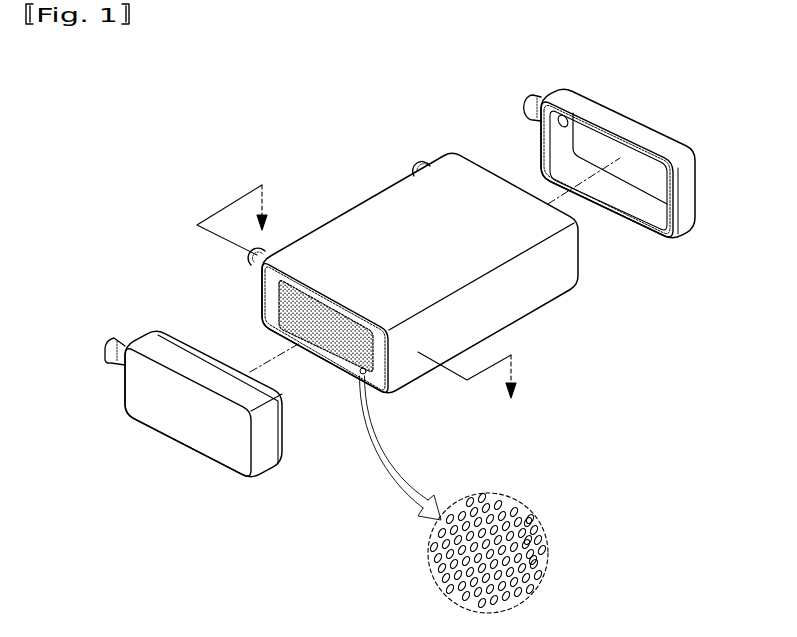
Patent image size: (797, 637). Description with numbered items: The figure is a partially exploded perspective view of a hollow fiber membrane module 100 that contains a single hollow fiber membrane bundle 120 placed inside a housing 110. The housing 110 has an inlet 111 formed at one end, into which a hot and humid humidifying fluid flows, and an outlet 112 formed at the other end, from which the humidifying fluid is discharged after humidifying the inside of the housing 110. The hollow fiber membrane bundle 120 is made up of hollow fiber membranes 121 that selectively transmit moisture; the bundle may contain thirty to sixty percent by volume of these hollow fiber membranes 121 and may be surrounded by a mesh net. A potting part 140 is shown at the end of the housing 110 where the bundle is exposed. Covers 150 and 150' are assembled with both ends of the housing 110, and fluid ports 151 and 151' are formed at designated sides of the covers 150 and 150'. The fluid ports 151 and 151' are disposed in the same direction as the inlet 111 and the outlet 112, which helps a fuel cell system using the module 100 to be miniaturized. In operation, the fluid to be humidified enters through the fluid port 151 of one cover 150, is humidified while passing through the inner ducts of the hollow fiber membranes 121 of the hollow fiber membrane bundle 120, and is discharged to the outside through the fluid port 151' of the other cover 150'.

The hollow fiber membrane module 100 is at (234, 105).
The housing 110 is at (366, 199).
The inlet 111 is at (250, 262).
The outlet 112 is at (413, 166).
The hollow fiber membrane bundle 120 is at (270, 328).
The hollow fiber membranes 121 is at (536, 560).
The potting part 140 is at (322, 354).
The cover 150 is at (643, 195).
The fluid port 151 is at (504, 95).
The cover 150' is at (230, 437).
The fluid port 151' is at (106, 385).